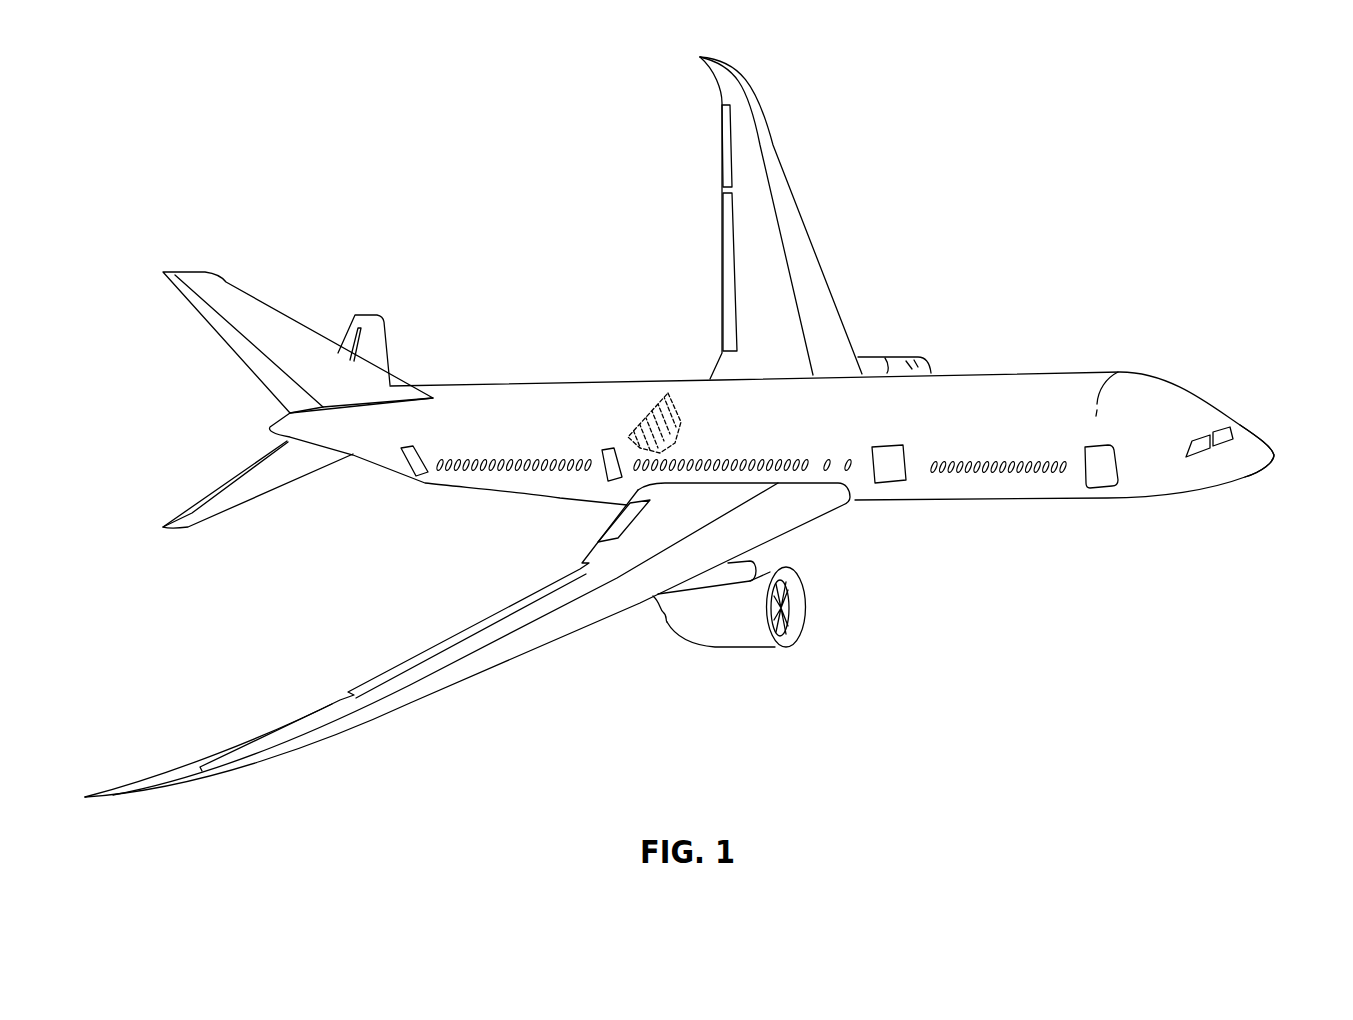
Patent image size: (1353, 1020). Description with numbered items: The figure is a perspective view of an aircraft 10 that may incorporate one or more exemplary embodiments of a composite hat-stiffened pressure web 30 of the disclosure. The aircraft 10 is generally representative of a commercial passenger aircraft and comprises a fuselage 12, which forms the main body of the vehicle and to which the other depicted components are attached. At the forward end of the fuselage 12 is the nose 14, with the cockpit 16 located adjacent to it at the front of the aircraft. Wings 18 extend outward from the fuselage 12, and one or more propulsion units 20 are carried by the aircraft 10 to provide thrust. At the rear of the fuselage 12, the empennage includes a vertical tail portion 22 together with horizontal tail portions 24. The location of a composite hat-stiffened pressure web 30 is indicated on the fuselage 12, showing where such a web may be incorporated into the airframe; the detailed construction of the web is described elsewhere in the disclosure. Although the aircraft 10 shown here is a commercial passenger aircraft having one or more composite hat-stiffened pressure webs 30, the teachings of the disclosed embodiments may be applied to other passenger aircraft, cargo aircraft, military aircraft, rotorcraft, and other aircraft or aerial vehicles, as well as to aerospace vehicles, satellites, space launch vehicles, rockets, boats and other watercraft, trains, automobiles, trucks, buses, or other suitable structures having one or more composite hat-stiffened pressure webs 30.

The aircraft 10 is at (1027, 170).
The fuselage 12 is at (993, 383).
The nose 14 is at (1247, 466).
The cockpit 16 is at (1236, 428).
The wings 18 is at (762, 137).
The propulsion units 20 is at (898, 362).
The vertical tail portion 22 is at (255, 323).
The horizontal tail portions 24 is at (380, 348).
The composite hat-stiffened pressure web 30 is at (630, 408).